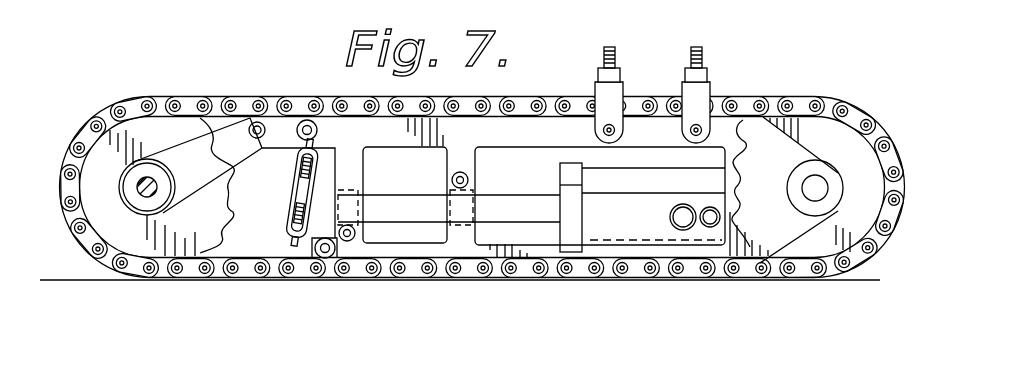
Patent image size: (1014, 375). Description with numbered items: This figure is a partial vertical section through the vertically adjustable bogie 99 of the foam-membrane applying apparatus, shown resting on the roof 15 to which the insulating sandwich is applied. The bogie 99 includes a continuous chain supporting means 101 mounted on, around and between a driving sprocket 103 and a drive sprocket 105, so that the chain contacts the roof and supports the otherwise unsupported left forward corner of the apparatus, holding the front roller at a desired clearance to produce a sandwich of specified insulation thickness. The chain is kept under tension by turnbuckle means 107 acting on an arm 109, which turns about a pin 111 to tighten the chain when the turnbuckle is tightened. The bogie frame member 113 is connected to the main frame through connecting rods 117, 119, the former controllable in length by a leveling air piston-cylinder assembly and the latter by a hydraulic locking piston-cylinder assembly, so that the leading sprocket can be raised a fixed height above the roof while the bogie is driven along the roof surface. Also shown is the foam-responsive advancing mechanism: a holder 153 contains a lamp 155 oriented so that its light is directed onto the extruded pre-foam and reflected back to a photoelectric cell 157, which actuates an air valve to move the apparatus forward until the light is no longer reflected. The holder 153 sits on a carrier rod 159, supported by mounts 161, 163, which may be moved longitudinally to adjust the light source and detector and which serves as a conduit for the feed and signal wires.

The roof 15 is at (878, 280).
The bogie 99 is at (481, 164).
The continuous chain supporting means 101 is at (770, 98).
The driving sprocket 103 is at (233, 217).
The drive sprocket 105 is at (736, 122).
The turnbuckle means 107 is at (286, 148).
The arm 109 is at (302, 121).
The pin 111 is at (250, 122).
The bogie frame member 113 is at (516, 104).
The connecting rod 117 is at (706, 50).
The connecting rod 119 is at (616, 50).
The holder 153 is at (635, 240).
The lamp 155 is at (710, 228).
The photoelectric cell 157 is at (670, 217).
The carrier rod 159 is at (540, 210).
The mount 161 is at (352, 245).
The mount 163 is at (455, 232).